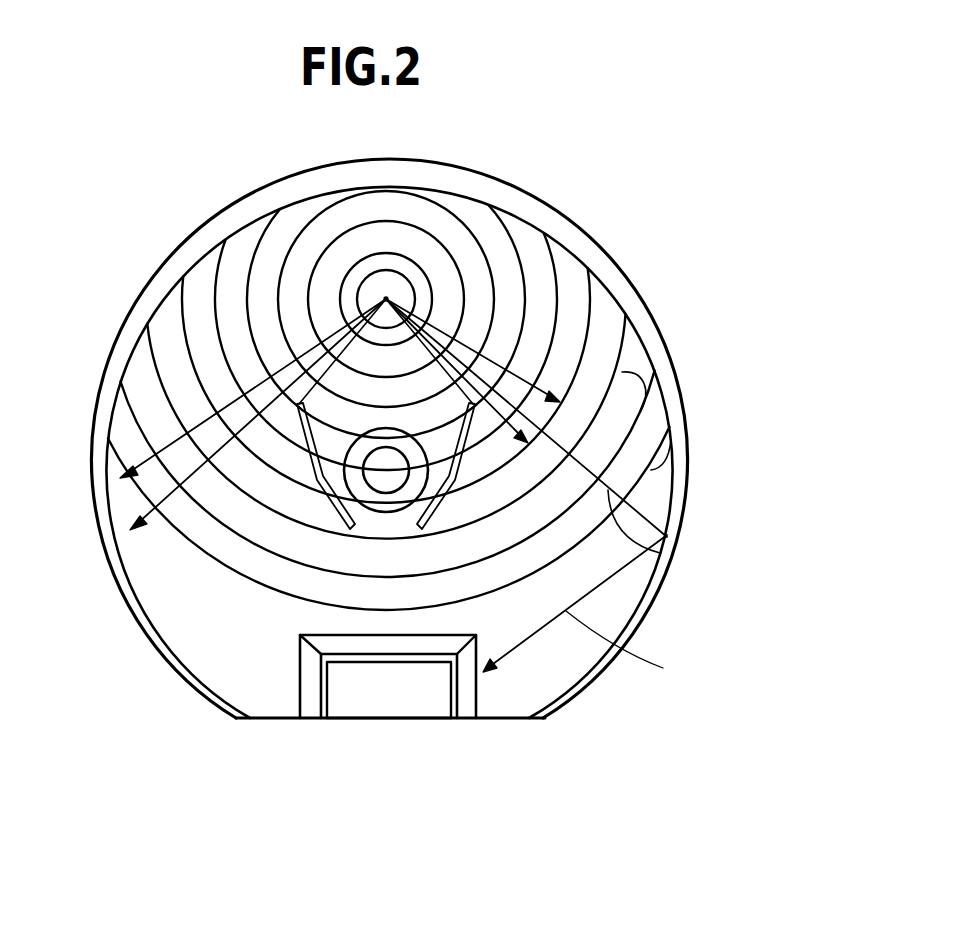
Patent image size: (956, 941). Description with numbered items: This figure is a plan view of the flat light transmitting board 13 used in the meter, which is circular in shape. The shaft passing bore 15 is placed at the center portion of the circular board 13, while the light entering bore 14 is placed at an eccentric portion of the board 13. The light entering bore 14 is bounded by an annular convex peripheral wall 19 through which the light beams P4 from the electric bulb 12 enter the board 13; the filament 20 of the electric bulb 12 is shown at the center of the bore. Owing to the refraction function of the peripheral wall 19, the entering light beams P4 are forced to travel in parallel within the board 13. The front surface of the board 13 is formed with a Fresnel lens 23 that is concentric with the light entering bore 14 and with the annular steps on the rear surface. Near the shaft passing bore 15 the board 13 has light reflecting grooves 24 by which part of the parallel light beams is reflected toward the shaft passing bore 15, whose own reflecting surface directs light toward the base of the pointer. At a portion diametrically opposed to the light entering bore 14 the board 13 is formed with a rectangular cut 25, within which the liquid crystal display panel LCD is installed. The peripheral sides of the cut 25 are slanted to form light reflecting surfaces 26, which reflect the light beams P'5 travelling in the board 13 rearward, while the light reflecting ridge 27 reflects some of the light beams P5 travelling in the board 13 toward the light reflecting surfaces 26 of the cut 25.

The electric bulb 12 is at (403, 272).
The flat light transmitting board 13 is at (495, 174).
The light entering bore 14 is at (425, 287).
The shaft passing bore 15 is at (394, 483).
The annular convex peripheral wall 19 is at (455, 320).
The filament 20 is at (386, 299).
The Fresnel lens 23 is at (622, 372).
The light reflecting grooves 24 is at (340, 523).
The rectangular cut 25 is at (451, 687).
The light reflecting surfaces 26 is at (367, 643).
The light reflecting ridge 27 is at (540, 222).
The light beams P4 is at (250, 413).
The light beams P5 is at (475, 410).
The light beams P'5 is at (636, 647).
The liquid crystal display panel LCD is at (387, 705).